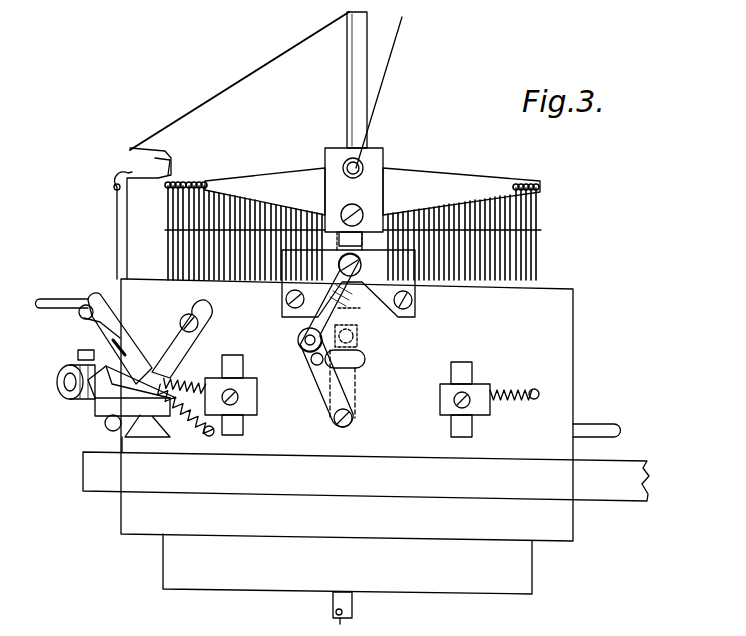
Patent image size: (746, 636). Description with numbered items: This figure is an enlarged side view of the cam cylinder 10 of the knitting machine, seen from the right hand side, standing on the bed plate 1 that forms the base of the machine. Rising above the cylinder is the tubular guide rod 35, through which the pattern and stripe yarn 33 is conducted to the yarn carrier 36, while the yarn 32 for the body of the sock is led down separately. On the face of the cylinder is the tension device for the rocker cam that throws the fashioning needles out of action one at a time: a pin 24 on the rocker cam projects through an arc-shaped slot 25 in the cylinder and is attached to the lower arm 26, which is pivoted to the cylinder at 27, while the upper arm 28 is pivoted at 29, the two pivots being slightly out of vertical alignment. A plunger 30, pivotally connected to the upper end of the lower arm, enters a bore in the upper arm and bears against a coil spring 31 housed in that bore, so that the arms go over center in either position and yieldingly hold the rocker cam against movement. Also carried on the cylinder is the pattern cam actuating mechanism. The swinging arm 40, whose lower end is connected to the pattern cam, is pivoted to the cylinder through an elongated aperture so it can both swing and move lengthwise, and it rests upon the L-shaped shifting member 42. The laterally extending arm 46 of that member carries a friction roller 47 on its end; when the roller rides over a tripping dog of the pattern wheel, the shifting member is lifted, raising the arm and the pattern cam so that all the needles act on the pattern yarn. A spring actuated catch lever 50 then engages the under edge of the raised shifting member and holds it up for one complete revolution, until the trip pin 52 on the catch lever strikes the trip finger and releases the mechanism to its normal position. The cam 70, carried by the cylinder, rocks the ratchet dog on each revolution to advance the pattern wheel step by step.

The bed plate 1 is at (640, 484).
The cam cylinder 10 is at (573, 332).
The pin 24 is at (314, 364).
The arc-shaped slot 25 is at (366, 361).
The lower arm 26 is at (322, 395).
The pivot of lower arm 27 is at (352, 420).
The upper arm 28 is at (340, 298).
The pivot of upper arm 29 is at (338, 265).
The plunger 30 is at (312, 322).
The coil spring 31 is at (350, 300).
The yarn 32 is at (398, 54).
The pattern and stripe yarn 33 is at (243, 78).
The tubular guide rod 35 is at (347, 103).
The yarn carrier 36 is at (130, 160).
The swinging arm 40 is at (162, 345).
The L-shaped shifting member 42 is at (90, 400).
The laterally extending arm 46 is at (112, 422).
The friction roller 47 is at (58, 381).
The catch lever 50 is at (96, 341).
The trip pin 52 is at (50, 299).
The cam 70 is at (612, 426).